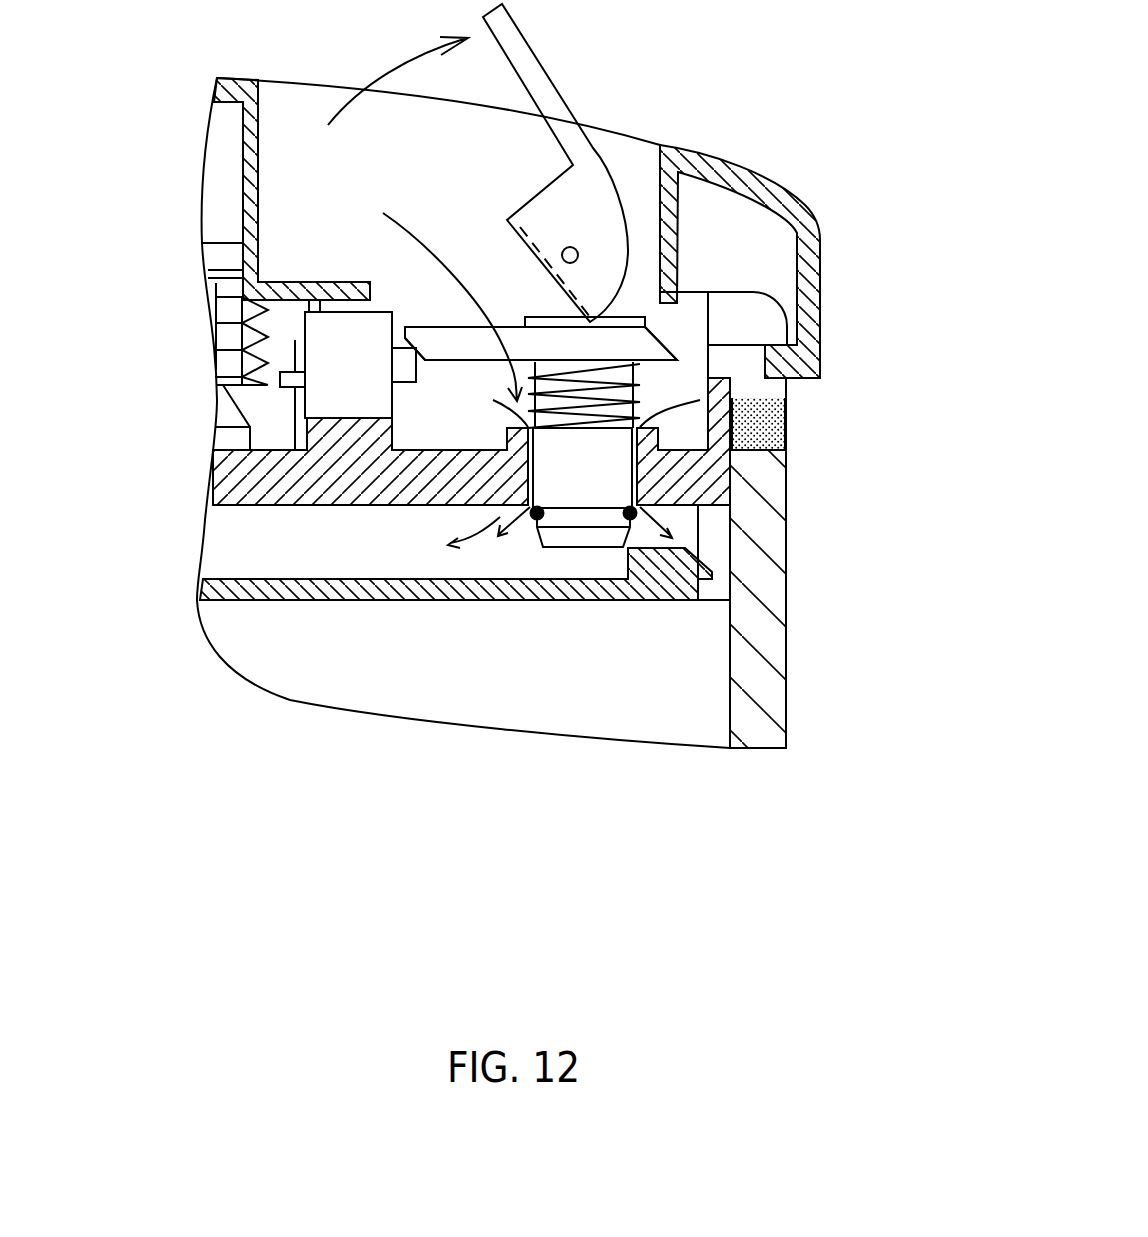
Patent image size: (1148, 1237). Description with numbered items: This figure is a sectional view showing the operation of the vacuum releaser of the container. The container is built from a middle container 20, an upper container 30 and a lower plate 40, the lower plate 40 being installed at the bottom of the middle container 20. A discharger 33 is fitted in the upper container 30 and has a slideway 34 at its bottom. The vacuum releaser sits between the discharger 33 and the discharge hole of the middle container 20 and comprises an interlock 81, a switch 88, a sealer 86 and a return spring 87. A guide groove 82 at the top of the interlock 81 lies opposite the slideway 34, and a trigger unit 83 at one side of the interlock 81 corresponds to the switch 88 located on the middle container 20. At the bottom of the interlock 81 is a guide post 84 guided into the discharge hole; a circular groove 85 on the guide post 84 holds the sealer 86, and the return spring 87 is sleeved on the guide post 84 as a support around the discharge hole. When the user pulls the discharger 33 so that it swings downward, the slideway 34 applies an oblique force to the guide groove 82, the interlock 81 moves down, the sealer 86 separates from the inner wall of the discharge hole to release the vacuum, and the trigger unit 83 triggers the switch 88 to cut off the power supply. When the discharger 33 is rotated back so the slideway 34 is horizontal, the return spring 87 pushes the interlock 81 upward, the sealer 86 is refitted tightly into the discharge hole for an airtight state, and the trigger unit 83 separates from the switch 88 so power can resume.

The middle container 20 is at (250, 487).
The upper container 30 is at (750, 190).
The discharger 33 is at (587, 200).
The slideway 34 is at (553, 270).
The lower plate 40 is at (200, 578).
The interlock 81 is at (645, 345).
The guide groove 82 is at (640, 300).
The trigger unit 83 is at (433, 320).
The guide post 84 is at (585, 480).
The circular groove 85 is at (545, 518).
The sealer 86 is at (536, 518).
The return spring 87 is at (627, 400).
The switch 88 is at (337, 363).